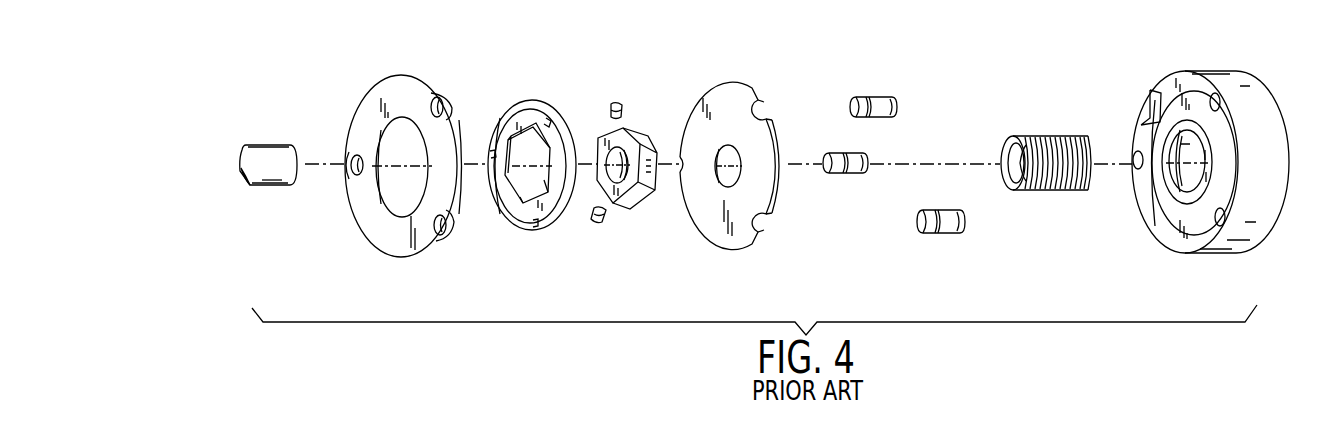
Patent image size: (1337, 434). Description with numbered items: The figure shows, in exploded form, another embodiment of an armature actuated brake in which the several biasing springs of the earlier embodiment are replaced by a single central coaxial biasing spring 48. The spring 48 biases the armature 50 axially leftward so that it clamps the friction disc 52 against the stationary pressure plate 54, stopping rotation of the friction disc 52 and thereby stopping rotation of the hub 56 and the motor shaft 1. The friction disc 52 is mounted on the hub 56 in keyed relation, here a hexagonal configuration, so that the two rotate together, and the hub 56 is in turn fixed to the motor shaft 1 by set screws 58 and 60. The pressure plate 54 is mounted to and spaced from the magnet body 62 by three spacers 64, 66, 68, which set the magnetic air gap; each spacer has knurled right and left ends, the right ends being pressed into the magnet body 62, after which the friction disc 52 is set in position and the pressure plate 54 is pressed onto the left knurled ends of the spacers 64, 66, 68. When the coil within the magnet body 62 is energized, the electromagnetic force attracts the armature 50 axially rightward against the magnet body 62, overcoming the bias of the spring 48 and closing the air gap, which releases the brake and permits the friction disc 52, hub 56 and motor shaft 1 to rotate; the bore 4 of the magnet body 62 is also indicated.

The motor shaft 1 is at (276, 157).
The bore of housing 4 is at (1157, 133).
The central coaxial biasing spring 48 is at (1048, 192).
The armature 50 is at (755, 242).
The friction disc 52 is at (546, 229).
The stationary pressure plate 54 is at (418, 77).
The hub 56 is at (652, 136).
The set screw 58 is at (603, 221).
The set screw 60 is at (613, 104).
The magnet body 62 is at (1238, 253).
The spacer 64 is at (877, 98).
The spacer 66 is at (934, 236).
The spacer 68 is at (845, 175).